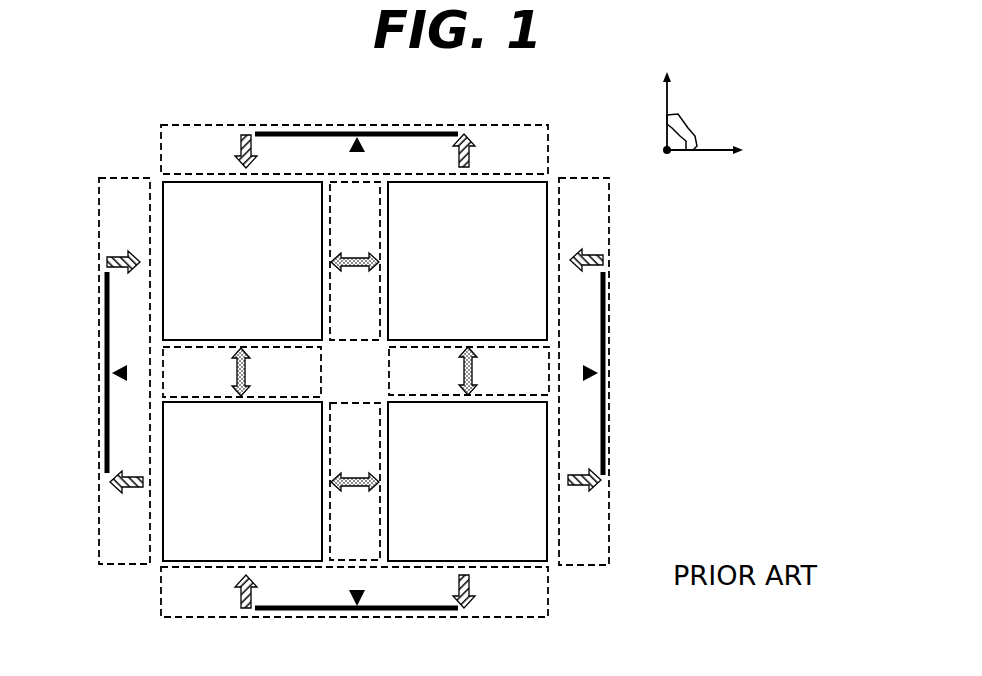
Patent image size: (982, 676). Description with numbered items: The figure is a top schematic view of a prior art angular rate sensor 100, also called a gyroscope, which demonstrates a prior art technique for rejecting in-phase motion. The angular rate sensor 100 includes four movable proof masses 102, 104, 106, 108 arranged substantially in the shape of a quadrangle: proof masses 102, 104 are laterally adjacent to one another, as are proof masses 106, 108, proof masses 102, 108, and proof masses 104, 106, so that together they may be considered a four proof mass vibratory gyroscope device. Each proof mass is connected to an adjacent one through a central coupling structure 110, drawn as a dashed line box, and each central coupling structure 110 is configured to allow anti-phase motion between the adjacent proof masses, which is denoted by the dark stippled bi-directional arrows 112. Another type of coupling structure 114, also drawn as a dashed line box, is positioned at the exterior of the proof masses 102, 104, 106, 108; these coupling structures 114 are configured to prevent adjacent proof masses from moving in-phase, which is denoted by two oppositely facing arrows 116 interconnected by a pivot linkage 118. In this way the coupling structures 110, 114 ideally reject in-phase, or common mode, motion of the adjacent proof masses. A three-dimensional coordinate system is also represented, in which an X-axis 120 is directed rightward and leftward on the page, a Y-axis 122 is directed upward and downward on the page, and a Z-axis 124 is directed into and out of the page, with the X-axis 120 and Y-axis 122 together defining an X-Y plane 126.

The angular rate sensor 100 is at (78, 640).
The proof mass 102 is at (221, 274).
The proof mass 104 is at (445, 274).
The proof mass 106 is at (445, 496).
The proof mass 108 is at (221, 494).
The central coupling structure 110 is at (335, 216).
The bi-directional arrows 112 is at (355, 273).
The coupling structure 114 is at (205, 125).
The oppositely facing arrows 116 is at (111, 253).
The pivot linkage 118 is at (298, 125).
The X-axis 120 is at (767, 150).
The Y-axis 122 is at (655, 54).
The Z-axis 124 is at (678, 167).
The X-Y plane 126 is at (690, 127).